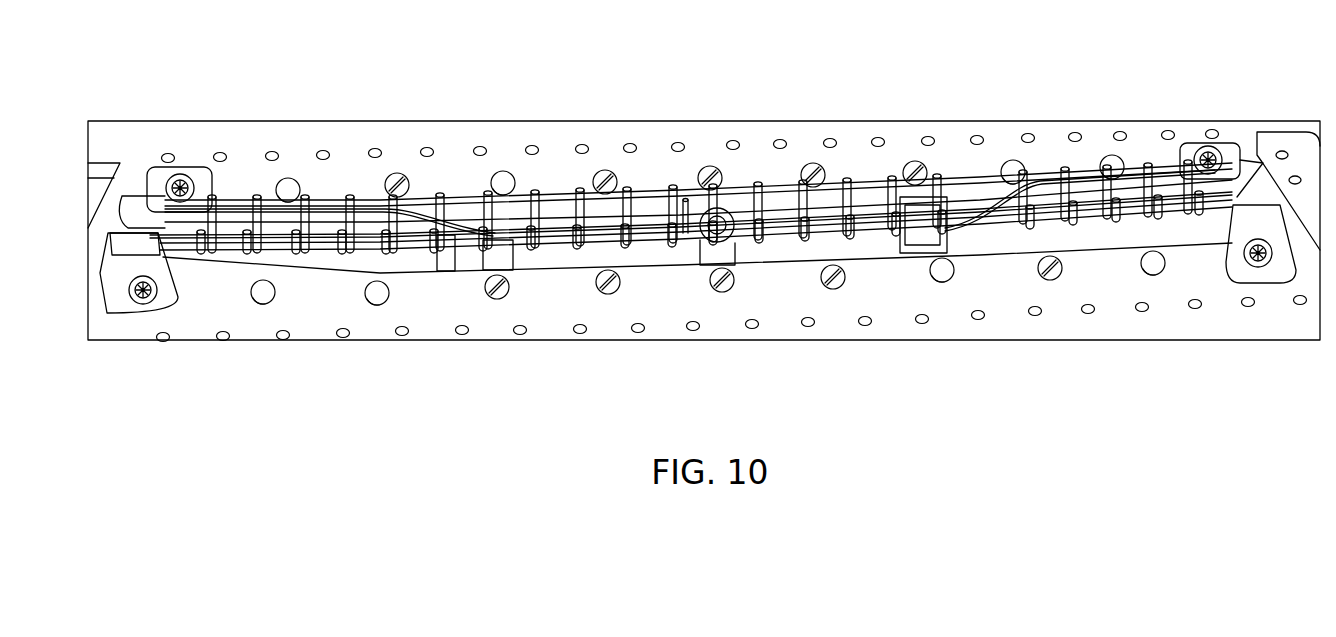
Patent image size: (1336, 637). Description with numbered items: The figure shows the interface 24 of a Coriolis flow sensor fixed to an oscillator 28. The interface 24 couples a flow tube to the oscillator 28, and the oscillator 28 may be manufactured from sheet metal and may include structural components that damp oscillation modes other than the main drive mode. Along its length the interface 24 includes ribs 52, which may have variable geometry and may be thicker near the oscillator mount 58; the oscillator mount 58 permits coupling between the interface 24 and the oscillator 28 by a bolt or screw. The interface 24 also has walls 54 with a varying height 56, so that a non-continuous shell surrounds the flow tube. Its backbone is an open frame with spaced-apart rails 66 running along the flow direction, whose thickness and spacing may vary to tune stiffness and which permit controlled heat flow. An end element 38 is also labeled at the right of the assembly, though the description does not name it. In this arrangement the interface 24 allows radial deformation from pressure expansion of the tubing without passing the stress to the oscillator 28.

The interface 24 is at (1188, 125).
The oscillator 28 is at (682, 195).
The end mounting bracket 38 is at (1272, 262).
The ribs 52 is at (437, 190).
The walls 54 is at (118, 378).
The varying height 56 is at (495, 378).
The oscillator mount 58 is at (960, 378).
The rails 66 is at (197, 218).